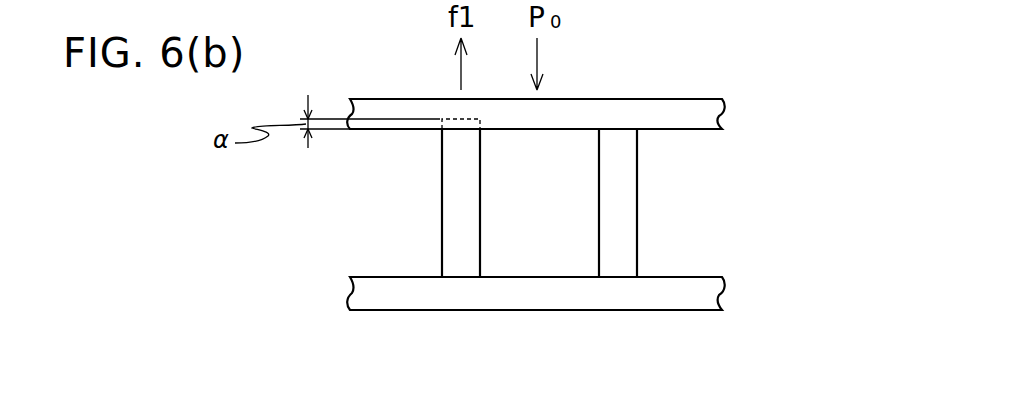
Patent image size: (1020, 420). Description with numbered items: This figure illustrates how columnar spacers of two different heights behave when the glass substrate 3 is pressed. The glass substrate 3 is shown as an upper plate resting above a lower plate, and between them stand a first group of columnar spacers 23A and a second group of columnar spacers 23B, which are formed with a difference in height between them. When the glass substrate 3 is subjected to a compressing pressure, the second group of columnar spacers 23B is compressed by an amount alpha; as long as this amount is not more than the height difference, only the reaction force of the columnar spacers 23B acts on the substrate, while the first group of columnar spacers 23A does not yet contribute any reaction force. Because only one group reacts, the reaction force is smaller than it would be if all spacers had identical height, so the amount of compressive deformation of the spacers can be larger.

The glass substrate 3 is at (642, 110).
The first group of columnar spacers 23A is at (622, 208).
The second group of columnar spacers 23B is at (452, 220).